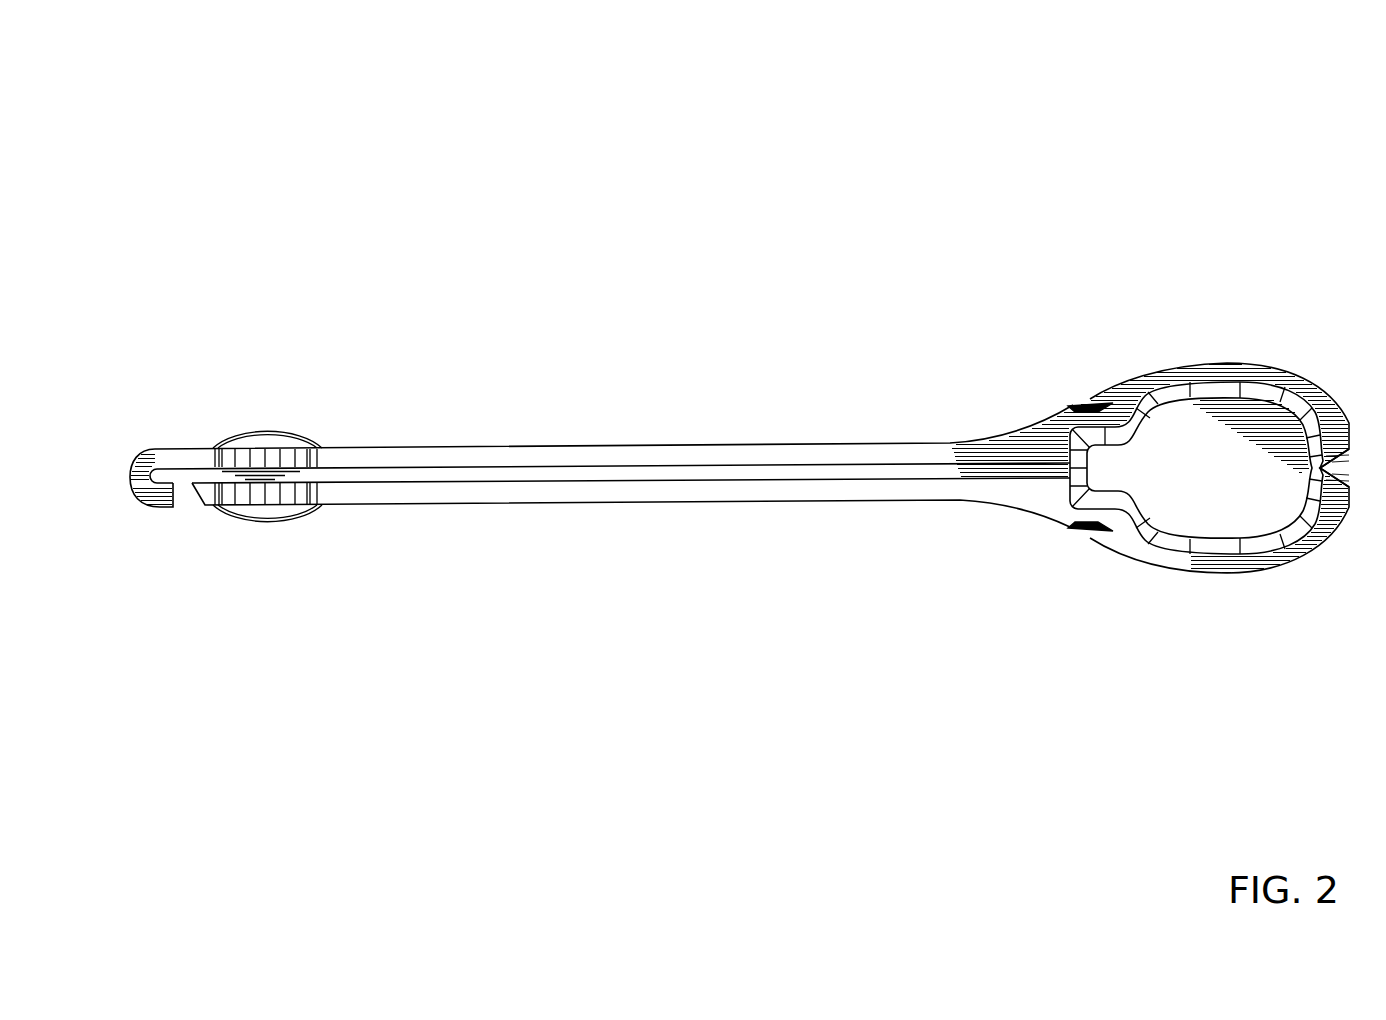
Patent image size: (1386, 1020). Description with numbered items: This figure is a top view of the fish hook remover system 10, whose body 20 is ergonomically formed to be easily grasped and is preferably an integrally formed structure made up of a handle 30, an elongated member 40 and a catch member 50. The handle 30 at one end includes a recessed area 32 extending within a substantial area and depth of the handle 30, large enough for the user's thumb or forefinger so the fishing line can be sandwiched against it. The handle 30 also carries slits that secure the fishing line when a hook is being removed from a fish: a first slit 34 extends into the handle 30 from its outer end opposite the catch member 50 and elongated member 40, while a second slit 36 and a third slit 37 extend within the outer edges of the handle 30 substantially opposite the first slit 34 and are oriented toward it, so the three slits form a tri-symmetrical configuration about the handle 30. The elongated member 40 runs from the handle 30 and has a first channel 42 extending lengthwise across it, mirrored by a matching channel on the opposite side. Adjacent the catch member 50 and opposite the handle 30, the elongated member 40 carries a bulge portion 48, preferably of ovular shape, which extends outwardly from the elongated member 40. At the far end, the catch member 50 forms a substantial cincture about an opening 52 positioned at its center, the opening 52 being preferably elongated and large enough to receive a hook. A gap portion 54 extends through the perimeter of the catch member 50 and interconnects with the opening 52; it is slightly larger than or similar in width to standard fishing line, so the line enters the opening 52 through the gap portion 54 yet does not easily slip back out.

The fish hook remover system 10 is at (240, 133).
The body 20 is at (545, 503).
The handle 30 is at (1183, 363).
The recessed area 32 is at (1187, 497).
The first slit 34 is at (1350, 466).
The second slit 36 is at (1080, 405).
The third slit 37 is at (1085, 537).
The elongated member 40 is at (765, 492).
The first channel 42 is at (433, 475).
The bulge portion 48 is at (290, 517).
The catch member 50 is at (155, 495).
The opening 52 is at (170, 475).
The gap portion 54 is at (192, 490).